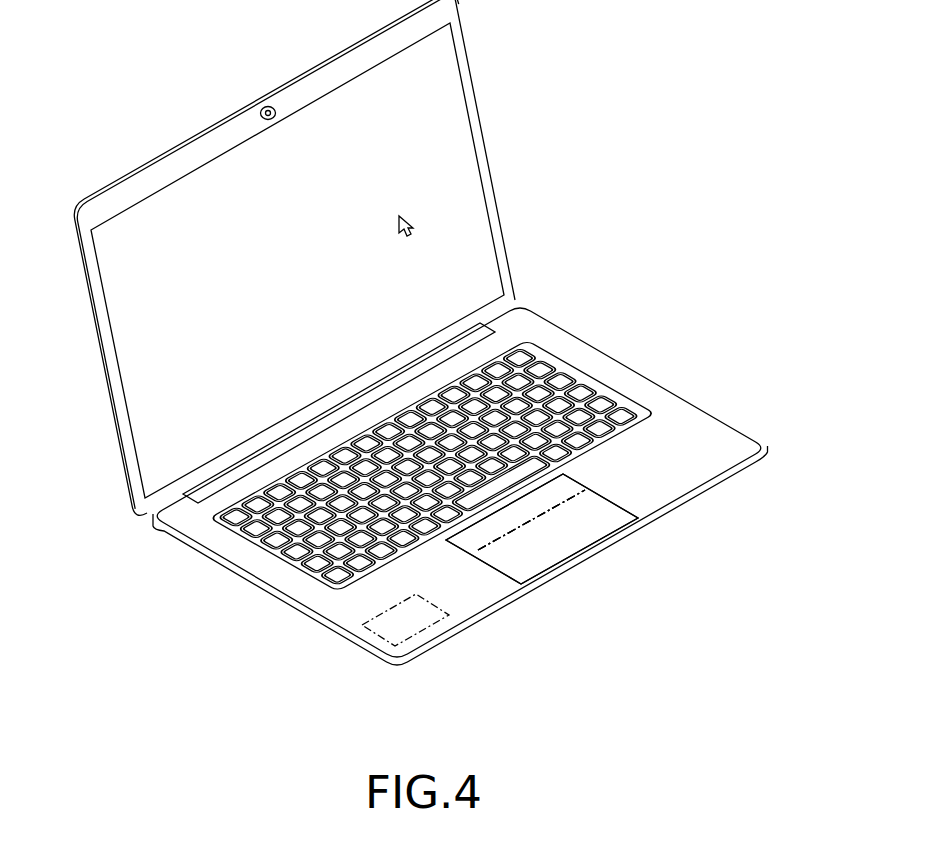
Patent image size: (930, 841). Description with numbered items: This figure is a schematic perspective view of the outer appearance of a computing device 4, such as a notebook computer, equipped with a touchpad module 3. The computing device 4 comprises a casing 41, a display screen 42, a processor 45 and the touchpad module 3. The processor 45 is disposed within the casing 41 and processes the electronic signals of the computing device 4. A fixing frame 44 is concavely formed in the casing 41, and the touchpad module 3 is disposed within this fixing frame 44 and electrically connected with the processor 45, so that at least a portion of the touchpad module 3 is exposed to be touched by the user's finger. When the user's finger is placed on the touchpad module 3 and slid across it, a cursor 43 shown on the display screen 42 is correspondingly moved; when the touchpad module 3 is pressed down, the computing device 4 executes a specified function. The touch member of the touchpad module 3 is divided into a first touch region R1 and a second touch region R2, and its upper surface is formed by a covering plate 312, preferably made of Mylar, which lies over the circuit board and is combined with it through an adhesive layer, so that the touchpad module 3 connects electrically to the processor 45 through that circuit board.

The computing device 4 is at (653, 119).
The casing 41 is at (678, 410).
The display screen 42 is at (452, 84).
The cursor 43 is at (404, 214).
The fixing frame 44 is at (609, 502).
The processor 45 is at (393, 629).
The touchpad module 3 is at (591, 514).
The covering plate 312 is at (538, 553).
The first touch region R1 is at (517, 556).
The second touch region R2 is at (478, 538).